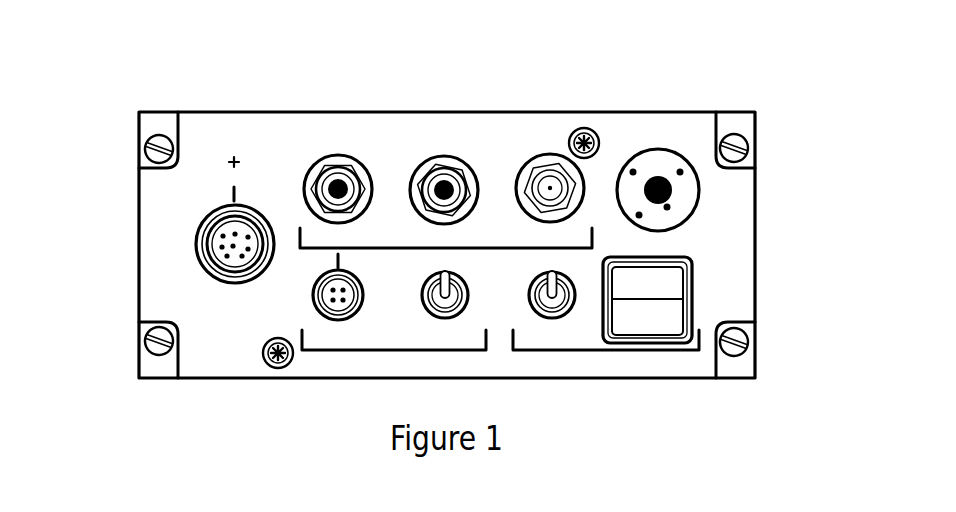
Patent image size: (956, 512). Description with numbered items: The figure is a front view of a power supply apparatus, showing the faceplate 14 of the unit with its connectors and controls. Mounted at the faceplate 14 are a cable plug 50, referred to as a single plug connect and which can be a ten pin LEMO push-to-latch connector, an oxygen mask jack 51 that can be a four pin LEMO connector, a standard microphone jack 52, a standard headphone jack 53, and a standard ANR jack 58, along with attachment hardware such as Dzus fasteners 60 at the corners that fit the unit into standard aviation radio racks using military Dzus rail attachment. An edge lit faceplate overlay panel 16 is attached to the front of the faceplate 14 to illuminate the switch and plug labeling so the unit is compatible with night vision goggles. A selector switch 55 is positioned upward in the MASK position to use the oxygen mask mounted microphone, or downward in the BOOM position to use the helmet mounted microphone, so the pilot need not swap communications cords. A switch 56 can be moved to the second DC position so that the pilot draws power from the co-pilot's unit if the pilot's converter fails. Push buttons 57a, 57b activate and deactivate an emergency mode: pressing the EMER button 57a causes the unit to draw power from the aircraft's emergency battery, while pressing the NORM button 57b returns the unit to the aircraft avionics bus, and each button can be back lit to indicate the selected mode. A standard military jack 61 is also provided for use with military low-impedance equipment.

The faceplate 14 is at (725, 360).
The edge lit faceplate overlay panel 16 is at (222, 132).
The cable plug 50 is at (224, 245).
The oxygen mask jack 51 is at (314, 298).
The microphone jack 52 is at (340, 180).
The headphone jack 53 is at (448, 182).
The selector switch 55 is at (450, 302).
The switch 56 is at (557, 300).
The EMER button 57a is at (669, 290).
The NORM button 57b is at (675, 317).
The ANR jack 58 is at (551, 180).
The Dzus fasteners 60 is at (153, 138).
The military U-174/U jack 61 is at (659, 182).